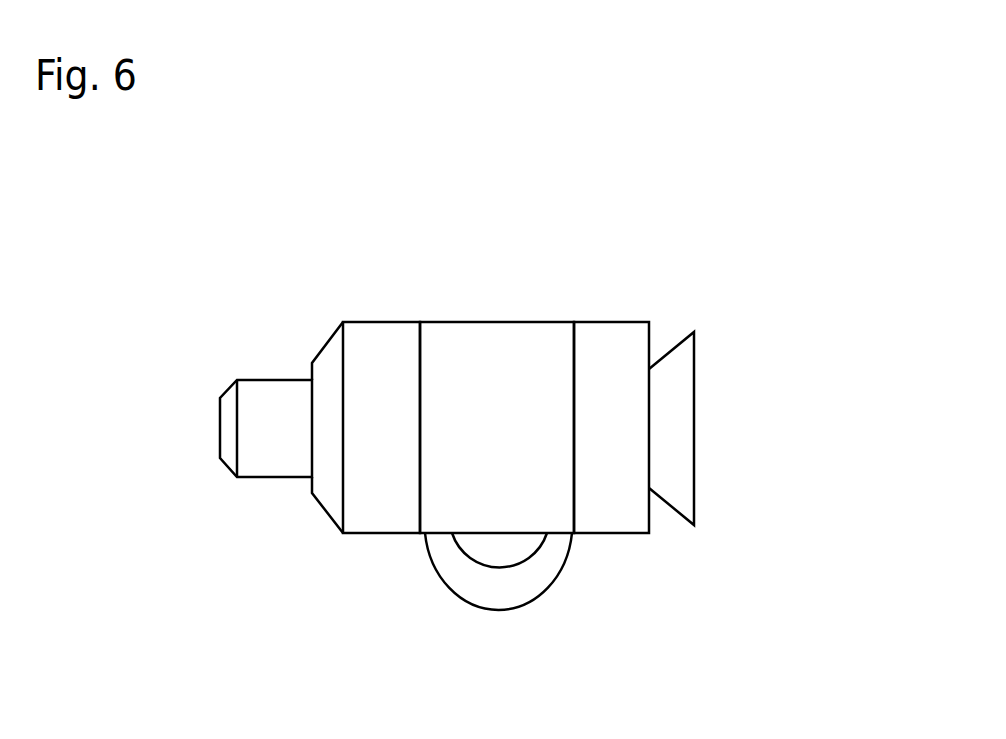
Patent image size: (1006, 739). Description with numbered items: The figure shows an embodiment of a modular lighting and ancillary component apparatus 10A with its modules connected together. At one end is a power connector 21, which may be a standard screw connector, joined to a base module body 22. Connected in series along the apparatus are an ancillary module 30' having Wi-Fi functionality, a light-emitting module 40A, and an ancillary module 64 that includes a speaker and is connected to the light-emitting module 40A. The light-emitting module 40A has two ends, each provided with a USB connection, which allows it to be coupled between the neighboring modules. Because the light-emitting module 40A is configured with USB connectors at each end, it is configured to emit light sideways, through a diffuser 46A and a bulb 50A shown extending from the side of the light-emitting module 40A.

The modular lighting and ancillary component apparatus 10A is at (707, 230).
The power connector 21 is at (255, 425).
The base module body 22 is at (332, 473).
The ancillary module 30' is at (383, 350).
The light-emitting module 40A is at (493, 383).
The ancillary module 64 is at (612, 383).
The diffuser 46A is at (507, 553).
The bulb 50A is at (507, 608).